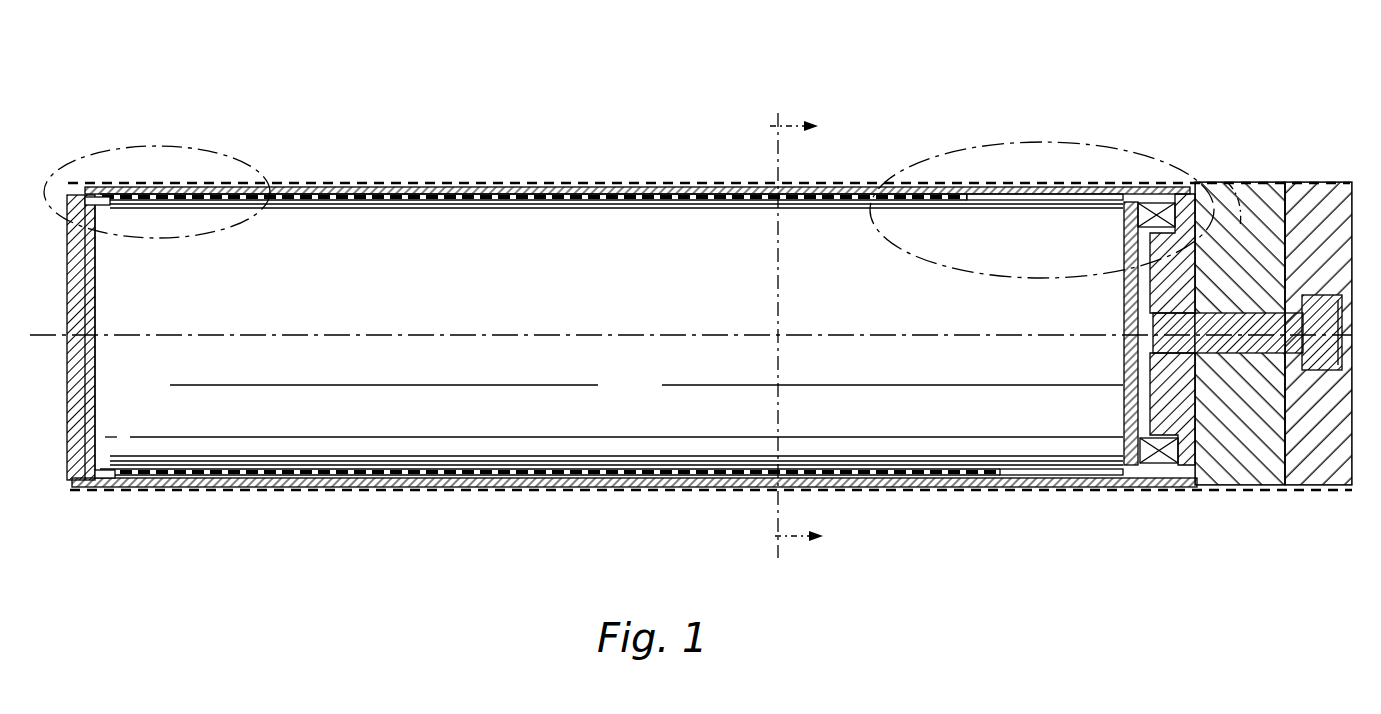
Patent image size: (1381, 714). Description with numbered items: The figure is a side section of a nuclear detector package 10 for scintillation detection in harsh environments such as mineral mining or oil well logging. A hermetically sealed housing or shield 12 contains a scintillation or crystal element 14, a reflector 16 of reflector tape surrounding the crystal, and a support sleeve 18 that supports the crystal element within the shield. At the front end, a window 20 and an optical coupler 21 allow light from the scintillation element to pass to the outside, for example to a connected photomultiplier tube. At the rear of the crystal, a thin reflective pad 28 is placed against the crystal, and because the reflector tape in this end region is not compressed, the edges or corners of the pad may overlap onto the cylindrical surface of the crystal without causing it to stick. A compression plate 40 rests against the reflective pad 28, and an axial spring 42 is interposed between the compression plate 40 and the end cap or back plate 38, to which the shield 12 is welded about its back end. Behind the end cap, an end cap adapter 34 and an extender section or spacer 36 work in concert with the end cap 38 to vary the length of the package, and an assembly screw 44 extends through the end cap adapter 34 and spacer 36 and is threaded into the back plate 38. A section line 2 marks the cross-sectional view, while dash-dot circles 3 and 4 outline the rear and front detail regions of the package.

The nuclear detector package 10 is at (603, 132).
The housing or shield 12 is at (420, 188).
The scintillation or crystal element 14 is at (643, 400).
The reflector 16 is at (668, 204).
The support sleeve 18 is at (524, 198).
The window 20 is at (79, 414).
The optical coupler 21 is at (97, 394).
The reflective pad 28 is at (1220, 242).
The end cap adapter 34 is at (1320, 462).
The extender section or spacer 36 is at (1257, 457).
The end cap or back plate 38 is at (1180, 412).
The compression plate 40 is at (1132, 400).
The axial spring 42 is at (1158, 460).
The assembly screw 44 is at (1325, 305).
The section line 2- 2 is at (788, 335).
The detail region of FIG. 3 is at (1140, 150).
The detail region of FIG. 4 is at (262, 165).